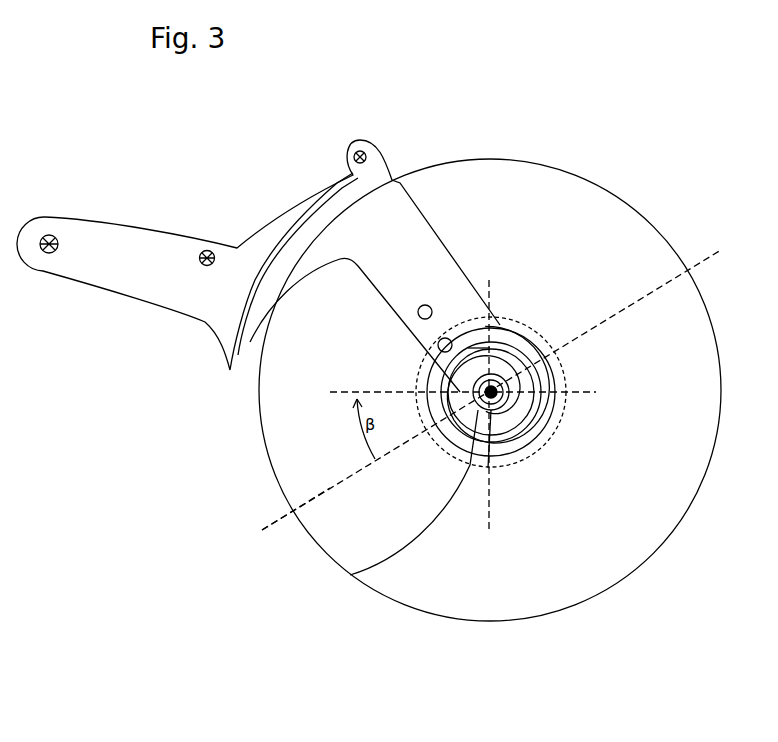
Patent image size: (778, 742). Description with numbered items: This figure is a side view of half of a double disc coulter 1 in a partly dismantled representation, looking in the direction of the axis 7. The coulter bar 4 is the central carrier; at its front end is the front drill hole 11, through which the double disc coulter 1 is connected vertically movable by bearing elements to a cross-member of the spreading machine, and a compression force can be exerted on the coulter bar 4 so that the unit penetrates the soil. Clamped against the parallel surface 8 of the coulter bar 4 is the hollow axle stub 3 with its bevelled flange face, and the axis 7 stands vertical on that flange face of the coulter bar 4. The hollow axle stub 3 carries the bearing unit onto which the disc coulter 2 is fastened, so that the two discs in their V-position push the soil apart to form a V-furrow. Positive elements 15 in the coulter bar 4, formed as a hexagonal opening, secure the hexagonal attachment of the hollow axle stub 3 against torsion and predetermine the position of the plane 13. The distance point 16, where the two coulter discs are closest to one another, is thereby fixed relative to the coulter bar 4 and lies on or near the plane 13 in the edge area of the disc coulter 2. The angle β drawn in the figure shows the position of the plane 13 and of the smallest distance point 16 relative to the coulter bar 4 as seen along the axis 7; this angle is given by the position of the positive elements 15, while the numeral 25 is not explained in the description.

The double disc coulter 1 is at (278, 163).
The disc coulter 2 is at (558, 197).
The hollow axle stub 3 is at (350, 575).
The coulter bar 4 is at (403, 233).
The axis 7 is at (571, 393).
The parallel surface 8 is at (520, 340).
The front drill hole 11 is at (53, 237).
The plane 13 is at (328, 488).
The positive elements 15 is at (545, 541).
The distance point 16 is at (290, 513).
The shaft 25 is at (503, 403).